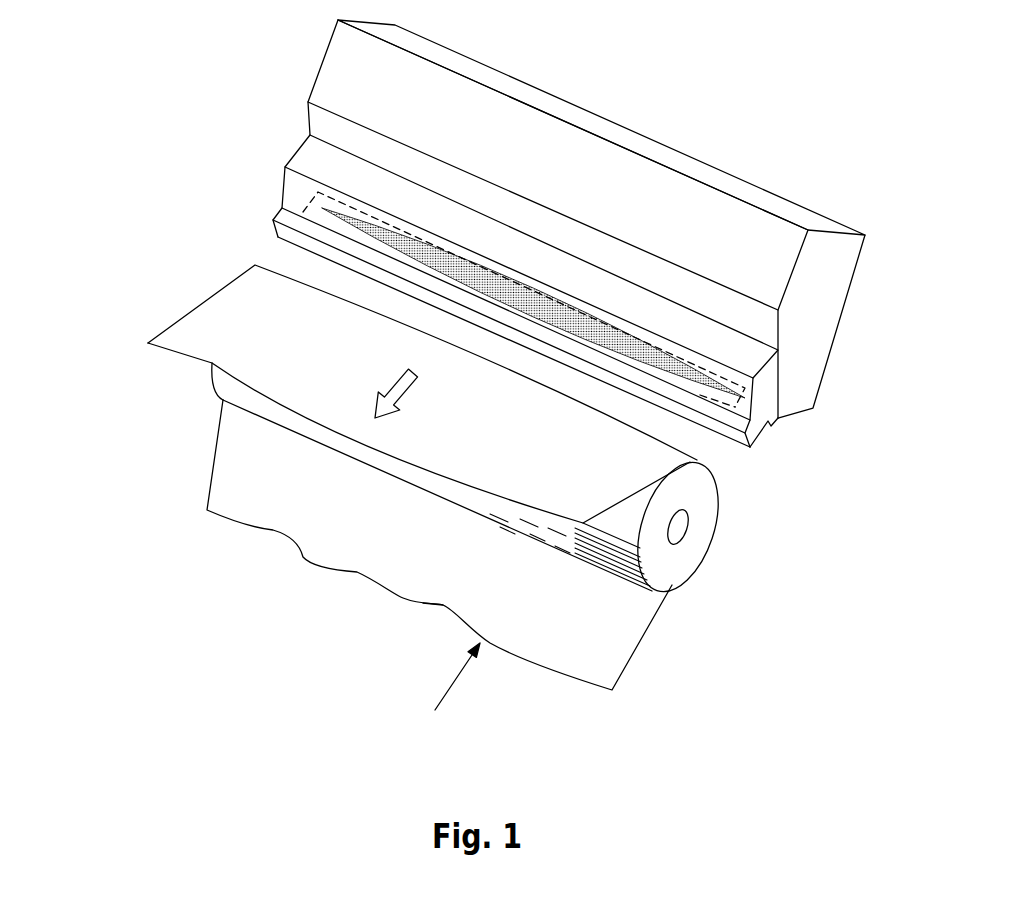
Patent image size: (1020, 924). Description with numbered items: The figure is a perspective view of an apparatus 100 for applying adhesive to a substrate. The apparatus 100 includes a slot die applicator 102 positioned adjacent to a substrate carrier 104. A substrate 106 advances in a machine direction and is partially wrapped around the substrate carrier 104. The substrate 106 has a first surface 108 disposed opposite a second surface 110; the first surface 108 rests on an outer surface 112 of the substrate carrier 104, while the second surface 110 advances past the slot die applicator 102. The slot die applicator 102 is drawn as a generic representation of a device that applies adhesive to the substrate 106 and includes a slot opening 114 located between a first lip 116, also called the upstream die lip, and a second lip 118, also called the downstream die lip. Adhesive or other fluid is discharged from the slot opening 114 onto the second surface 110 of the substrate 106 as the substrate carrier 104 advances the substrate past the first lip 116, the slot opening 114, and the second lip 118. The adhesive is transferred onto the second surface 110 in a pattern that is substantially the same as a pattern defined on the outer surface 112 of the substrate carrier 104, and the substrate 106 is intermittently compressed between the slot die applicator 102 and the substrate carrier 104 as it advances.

The apparatus 100 is at (828, 382).
The slot die applicator 102 is at (340, 170).
The substrate carrier 104 is at (703, 547).
The substrate 106 is at (255, 498).
The first surface 108 is at (433, 580).
The second surface 110 is at (200, 330).
The outer surface 112 is at (567, 535).
The slot opening 114 is at (343, 246).
The first lip 116 is at (333, 267).
The second lip 118 is at (293, 202).